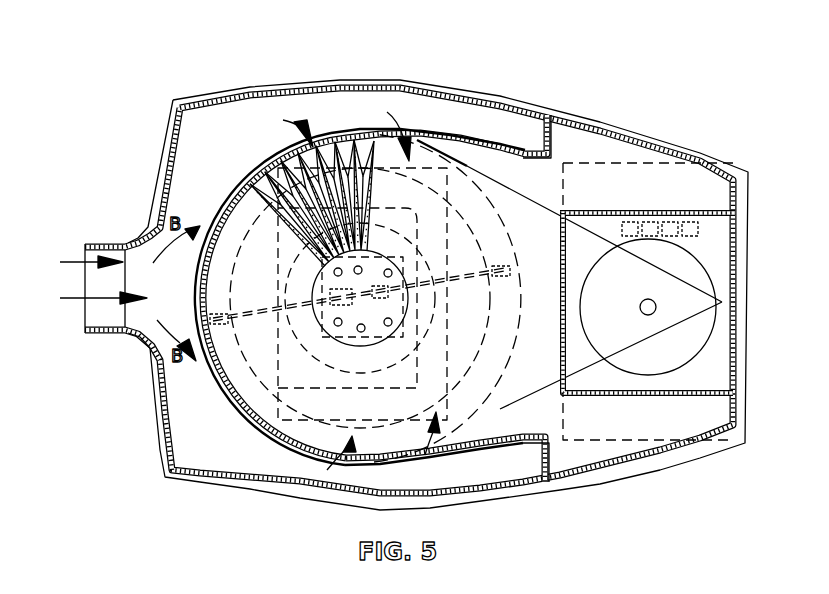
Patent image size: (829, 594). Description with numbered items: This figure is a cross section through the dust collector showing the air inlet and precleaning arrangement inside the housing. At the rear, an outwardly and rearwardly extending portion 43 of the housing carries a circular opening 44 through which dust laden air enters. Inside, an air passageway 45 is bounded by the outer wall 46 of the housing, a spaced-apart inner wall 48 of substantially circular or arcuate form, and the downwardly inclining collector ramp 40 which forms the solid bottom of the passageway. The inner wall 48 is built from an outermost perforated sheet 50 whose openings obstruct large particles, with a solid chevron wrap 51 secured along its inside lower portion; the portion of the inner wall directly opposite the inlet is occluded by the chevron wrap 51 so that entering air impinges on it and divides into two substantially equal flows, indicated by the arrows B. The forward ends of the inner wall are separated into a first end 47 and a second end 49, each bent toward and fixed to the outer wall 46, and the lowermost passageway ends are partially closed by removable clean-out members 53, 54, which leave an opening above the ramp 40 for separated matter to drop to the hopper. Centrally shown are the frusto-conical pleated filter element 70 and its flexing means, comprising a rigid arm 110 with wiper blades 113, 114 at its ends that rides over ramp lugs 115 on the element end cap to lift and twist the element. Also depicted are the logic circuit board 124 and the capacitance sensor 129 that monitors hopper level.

The collector ramp 40 is at (218, 449).
The outwardly and rearwardly extending portion 43 is at (131, 342).
The circular opening 44 is at (97, 279).
The air passageway 45 is at (257, 108).
The outer wall 46 is at (203, 101).
The first end 47 is at (519, 118).
The inner wall 48 is at (334, 113).
The second end 49 is at (528, 466).
The perforated sheet 50 is at (428, 131).
The chevron wrap 51 is at (197, 262).
The clean-out member 53 is at (553, 139).
The clean-out member 54 is at (541, 445).
The filter element 70 is at (359, 112).
The rigid arm 110 is at (421, 301).
The wiper blade 113 is at (221, 326).
The wiper blade 114 is at (500, 276).
The ramp lugs 115 is at (365, 343).
The circuit board 124 is at (722, 346).
The capacitance sensor 129 is at (633, 222).